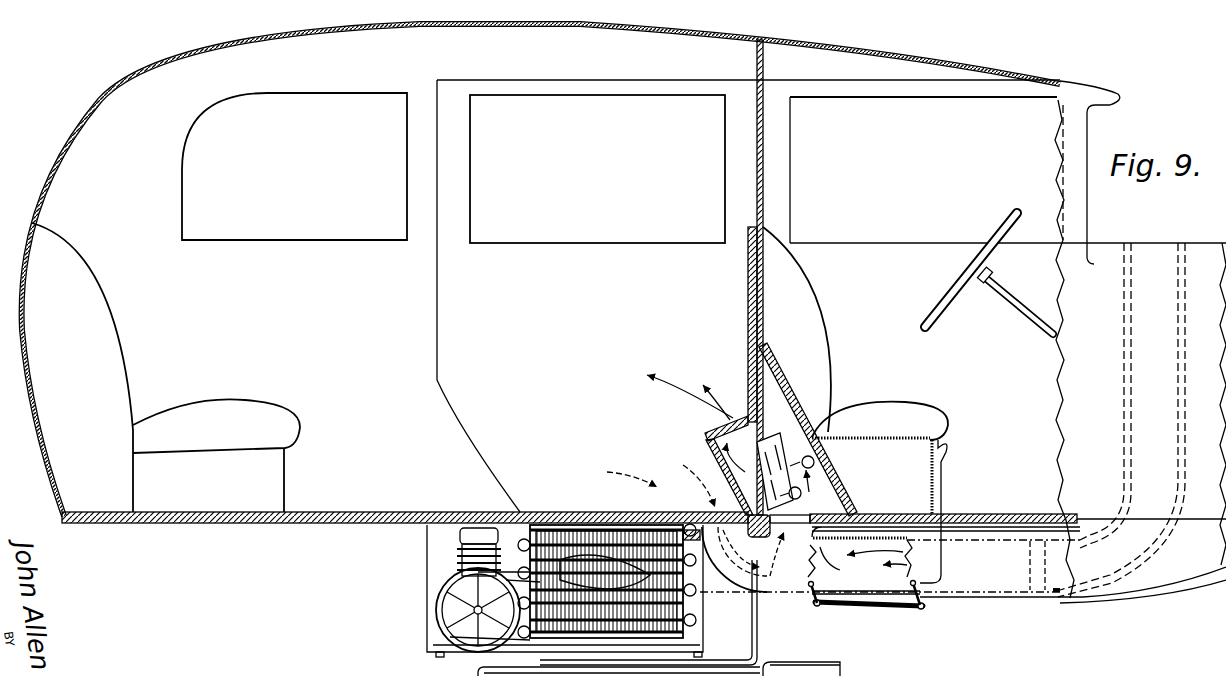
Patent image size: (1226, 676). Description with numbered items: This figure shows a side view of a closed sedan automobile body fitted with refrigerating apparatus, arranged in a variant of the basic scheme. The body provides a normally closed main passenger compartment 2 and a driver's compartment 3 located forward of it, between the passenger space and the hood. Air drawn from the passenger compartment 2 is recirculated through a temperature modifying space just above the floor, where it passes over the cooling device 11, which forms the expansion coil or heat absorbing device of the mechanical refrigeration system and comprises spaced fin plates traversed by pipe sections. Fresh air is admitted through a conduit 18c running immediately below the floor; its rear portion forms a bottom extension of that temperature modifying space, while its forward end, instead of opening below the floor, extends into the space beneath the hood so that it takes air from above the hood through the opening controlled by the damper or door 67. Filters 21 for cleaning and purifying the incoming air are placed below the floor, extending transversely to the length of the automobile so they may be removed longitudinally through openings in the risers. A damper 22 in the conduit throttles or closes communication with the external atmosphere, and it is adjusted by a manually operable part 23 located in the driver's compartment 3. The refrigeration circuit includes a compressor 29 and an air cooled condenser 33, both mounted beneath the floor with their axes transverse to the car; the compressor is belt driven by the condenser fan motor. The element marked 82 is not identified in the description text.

The main passenger compartment 2 is at (378, 302).
The driver's compartment 3 is at (908, 364).
The cooling device 11 is at (806, 428).
The conduit 18c is at (770, 584).
The filter 21 is at (1032, 590).
The damper 22 is at (806, 534).
The manually operable part 23 is at (946, 482).
The compressor 29 is at (457, 549).
The condenser 33 is at (563, 532).
The damper device 67 is at (1180, 213).
The receiver tank 82 is at (820, 669).